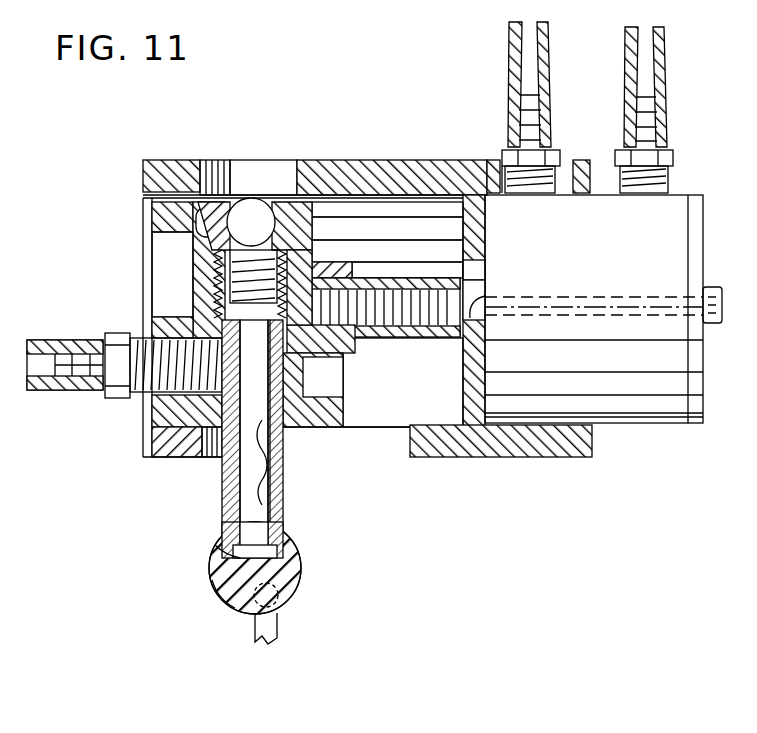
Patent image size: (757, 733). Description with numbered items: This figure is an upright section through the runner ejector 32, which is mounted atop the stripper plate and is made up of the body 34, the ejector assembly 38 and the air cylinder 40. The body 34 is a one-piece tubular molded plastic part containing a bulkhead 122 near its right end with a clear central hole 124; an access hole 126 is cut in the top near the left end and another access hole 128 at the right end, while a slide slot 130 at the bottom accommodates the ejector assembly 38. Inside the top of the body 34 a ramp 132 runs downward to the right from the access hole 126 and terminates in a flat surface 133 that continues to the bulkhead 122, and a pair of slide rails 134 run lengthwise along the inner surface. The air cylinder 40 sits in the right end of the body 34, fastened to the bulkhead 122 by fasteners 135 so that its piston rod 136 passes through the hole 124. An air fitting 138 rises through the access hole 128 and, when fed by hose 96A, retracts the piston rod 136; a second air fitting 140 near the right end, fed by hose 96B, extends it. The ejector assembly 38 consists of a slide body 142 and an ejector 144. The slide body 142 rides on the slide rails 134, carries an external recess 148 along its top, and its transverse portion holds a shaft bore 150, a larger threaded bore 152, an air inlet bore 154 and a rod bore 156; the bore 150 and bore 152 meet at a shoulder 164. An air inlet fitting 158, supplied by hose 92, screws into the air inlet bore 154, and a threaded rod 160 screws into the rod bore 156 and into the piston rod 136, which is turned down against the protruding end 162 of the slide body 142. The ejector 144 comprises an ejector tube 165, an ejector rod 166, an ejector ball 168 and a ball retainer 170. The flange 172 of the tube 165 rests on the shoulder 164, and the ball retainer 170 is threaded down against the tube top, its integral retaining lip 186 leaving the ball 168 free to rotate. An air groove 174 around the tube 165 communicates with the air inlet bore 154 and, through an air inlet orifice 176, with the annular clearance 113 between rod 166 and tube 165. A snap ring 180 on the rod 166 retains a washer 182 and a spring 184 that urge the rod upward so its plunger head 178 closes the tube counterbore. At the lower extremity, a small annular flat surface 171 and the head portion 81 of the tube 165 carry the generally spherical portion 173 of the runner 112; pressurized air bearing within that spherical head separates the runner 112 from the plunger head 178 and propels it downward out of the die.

The runner ejector 32 is at (346, 64).
The body 34 is at (363, 150).
The ejector assembly 38 is at (88, 217).
The air cylinder 40 is at (619, 253).
The head portion 81 is at (230, 560).
The hose 92 is at (34, 382).
The hose 96A is at (540, 46).
The hose 96B is at (655, 50).
The runner 112 is at (316, 568).
The annular clearance 113 is at (275, 437).
The bulkhead 122 is at (476, 236).
The clear central hole 124 is at (488, 270).
The access hole 126 is at (289, 160).
The access hole 128 is at (560, 158).
The slide slot 130 is at (400, 450).
The ramp 132 is at (383, 222).
The flat surface 133 is at (486, 212).
The slide rails 134 is at (140, 285).
The fasteners 135 is at (711, 289).
The piston rod 136 is at (474, 305).
The air fitting 138 is at (503, 152).
The air fitting 140 is at (667, 154).
The slide body 142 is at (170, 266).
The ejector 144 is at (215, 482).
The external recess 148 is at (148, 207).
The shaft bore 150 is at (262, 445).
The threaded bore 152 is at (218, 165).
The air inlet bore 154 is at (152, 428).
The rod bore 156 is at (350, 300).
The air inlet fitting 158 is at (32, 350).
The threaded rod 160 is at (405, 305).
The protruding end 162 is at (357, 345).
The shoulder 164 is at (333, 360).
The ejector tube 165 is at (283, 493).
The ejector rod 166 is at (262, 478).
The ejector ball 168 is at (249, 212).
The ball retainer 170 is at (212, 283).
The annular flat surface 171 is at (212, 582).
The flange 172 is at (145, 340).
The generally spherical portion 173 is at (297, 590).
The air groove 174 is at (308, 378).
The air inlet orifice 176 is at (150, 402).
The plunger head 178 is at (278, 552).
The snap ring 180 is at (318, 241).
The washer 182 is at (350, 268).
The spring 184 is at (150, 248).
The integral retaining lip 186 is at (262, 204).